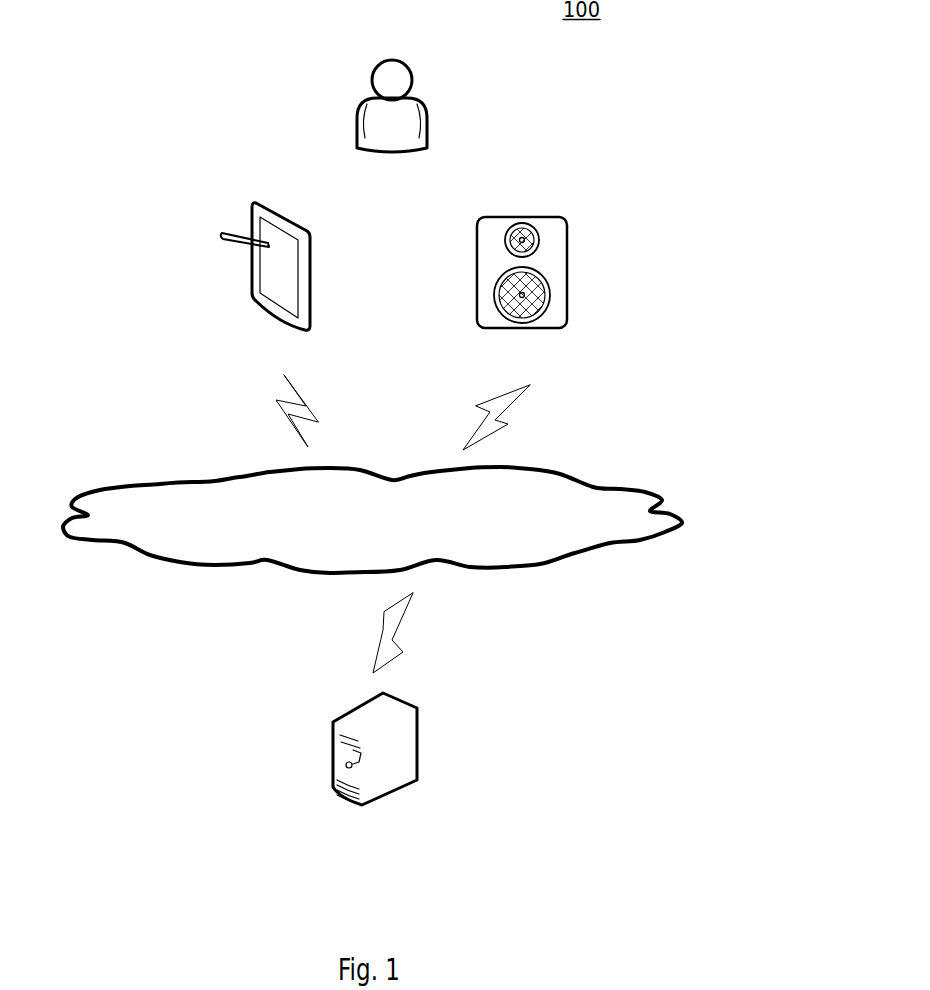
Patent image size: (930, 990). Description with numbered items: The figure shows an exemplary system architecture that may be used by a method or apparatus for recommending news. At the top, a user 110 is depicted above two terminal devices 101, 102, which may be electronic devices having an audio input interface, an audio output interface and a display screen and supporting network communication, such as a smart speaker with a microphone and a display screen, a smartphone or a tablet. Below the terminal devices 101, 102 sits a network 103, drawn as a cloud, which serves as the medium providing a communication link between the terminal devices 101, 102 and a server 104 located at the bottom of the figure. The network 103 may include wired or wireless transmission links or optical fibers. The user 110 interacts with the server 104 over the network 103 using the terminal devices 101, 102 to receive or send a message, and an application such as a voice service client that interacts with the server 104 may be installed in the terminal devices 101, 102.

The user 110 is at (392, 129).
The terminal device 101 is at (265, 286).
The terminal device 102 is at (522, 267).
The network 103 is at (372, 524).
The server 104 is at (375, 776).